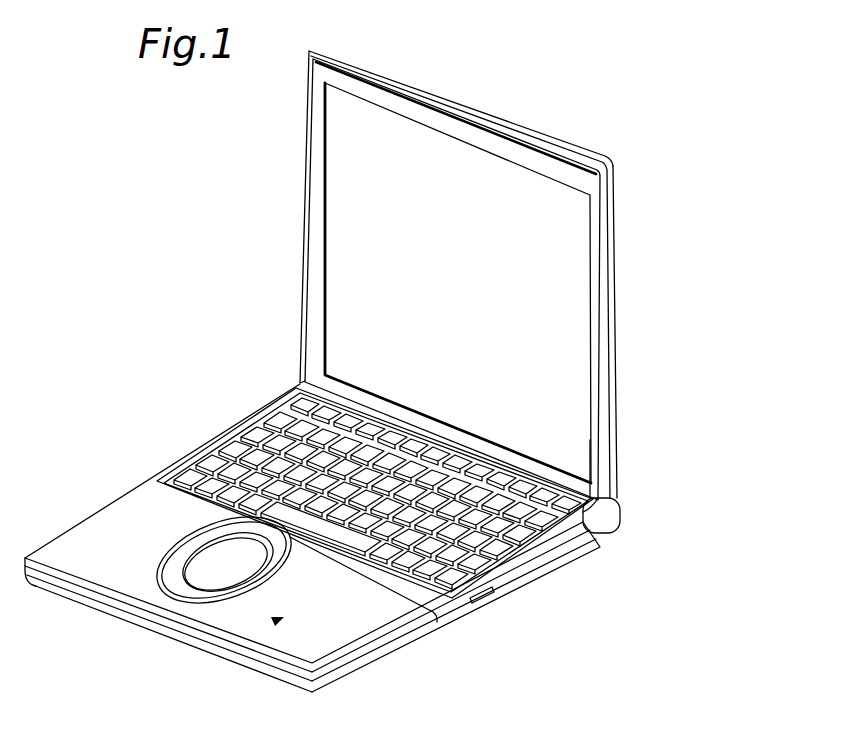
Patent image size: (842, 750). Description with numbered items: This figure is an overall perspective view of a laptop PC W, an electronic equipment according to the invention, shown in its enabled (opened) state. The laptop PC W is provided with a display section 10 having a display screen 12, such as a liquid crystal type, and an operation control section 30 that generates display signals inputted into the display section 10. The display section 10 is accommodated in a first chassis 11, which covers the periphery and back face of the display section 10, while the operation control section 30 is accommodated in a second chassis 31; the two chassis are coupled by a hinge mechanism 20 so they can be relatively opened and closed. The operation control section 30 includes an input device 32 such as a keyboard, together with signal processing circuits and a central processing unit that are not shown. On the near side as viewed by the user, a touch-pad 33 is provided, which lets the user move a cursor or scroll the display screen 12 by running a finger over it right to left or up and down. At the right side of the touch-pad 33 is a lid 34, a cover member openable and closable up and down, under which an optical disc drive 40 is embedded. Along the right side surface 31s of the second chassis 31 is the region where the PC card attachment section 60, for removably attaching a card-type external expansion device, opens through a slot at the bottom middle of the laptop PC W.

The display section 10 is at (310, 146).
The chassis 11 is at (602, 282).
The display screen 12 is at (343, 218).
The laptop PC W is at (626, 208).
The hinge mechanism 20 is at (614, 526).
The operation control section 30 is at (119, 488).
The chassis 31 is at (418, 633).
The side surface 31s is at (523, 570).
The input device 32 is at (245, 444).
The touch-pad 33 is at (193, 570).
The lid 34 is at (403, 630).
The optical disc drive 40 is at (278, 620).
The PC card attachment section 60 is at (467, 618).